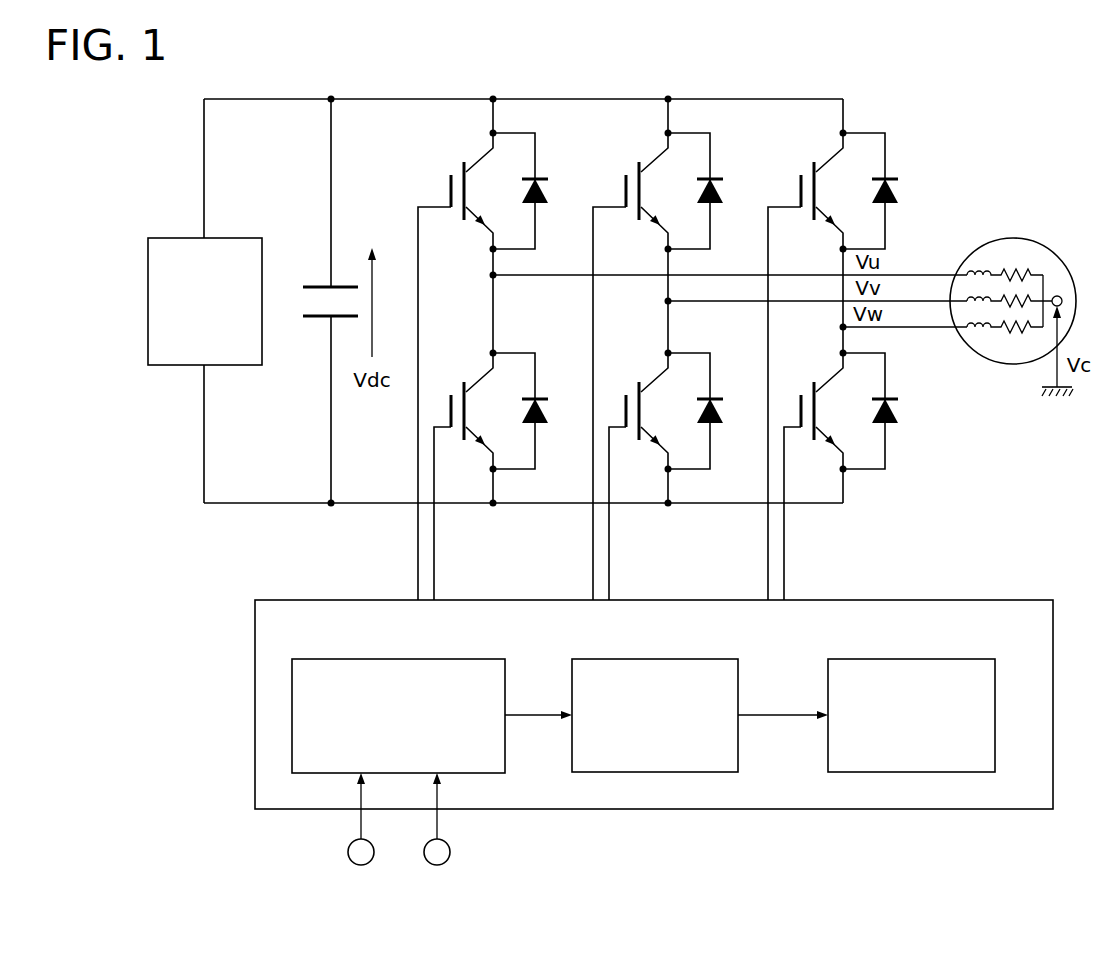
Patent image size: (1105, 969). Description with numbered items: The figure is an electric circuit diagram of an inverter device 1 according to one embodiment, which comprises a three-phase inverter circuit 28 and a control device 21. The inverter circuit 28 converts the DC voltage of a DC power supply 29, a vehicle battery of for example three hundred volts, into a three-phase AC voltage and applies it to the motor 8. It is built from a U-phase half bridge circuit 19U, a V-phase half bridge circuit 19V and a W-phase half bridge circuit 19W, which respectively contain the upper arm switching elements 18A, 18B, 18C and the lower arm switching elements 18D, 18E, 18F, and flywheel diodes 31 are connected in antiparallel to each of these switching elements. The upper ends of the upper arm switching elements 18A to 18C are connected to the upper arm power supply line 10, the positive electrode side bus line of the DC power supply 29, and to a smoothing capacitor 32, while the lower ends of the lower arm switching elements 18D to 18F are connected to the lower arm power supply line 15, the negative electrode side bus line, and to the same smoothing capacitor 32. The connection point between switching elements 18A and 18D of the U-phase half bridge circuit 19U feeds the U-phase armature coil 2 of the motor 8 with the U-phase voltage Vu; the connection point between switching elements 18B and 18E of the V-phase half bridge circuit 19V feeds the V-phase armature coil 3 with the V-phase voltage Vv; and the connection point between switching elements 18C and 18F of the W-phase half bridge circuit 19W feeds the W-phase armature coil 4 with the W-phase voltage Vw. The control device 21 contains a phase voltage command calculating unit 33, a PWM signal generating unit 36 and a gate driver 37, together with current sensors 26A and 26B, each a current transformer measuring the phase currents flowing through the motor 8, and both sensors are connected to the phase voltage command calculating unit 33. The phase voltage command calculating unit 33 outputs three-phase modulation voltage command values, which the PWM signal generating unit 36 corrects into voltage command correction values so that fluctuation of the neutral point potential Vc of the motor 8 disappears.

The inverter device 1 is at (112, 325).
The U-phase armature coil 2 is at (1000, 272).
The V-phase armature coil 3 is at (1000, 298).
The W-phase armature coil 4 is at (1000, 331).
The motor 8 is at (1005, 309).
The upper arm power supply line 10 is at (378, 99).
The lower arm power supply line 15 is at (372, 505).
The upper arm switching element 18A is at (451, 180).
The upper arm switching element 18B is at (626, 180).
The upper arm switching element 18C is at (801, 180).
The lower arm switching element 18D is at (451, 400).
The lower arm switching element 18E is at (626, 400).
The lower arm switching element 18F is at (801, 400).
The U-phase half bridge circuit 19U is at (479, 328).
The V-phase half bridge circuit 19V is at (654, 328).
The W-phase half bridge circuit 19W is at (831, 328).
The control device 21 is at (654, 670).
The current sensor 26A is at (359, 866).
The current sensor 26B is at (437, 866).
The three-phase inverter circuit 28 is at (696, 328).
The DC power supply 29 is at (148, 258).
The flywheel diode 31 is at (549, 190).
The smoothing capacitor 32 is at (318, 286).
The phase voltage command calculating unit 33 is at (433, 659).
The PWM signal generating unit 36 is at (690, 659).
The gate driver 37 is at (946, 659).